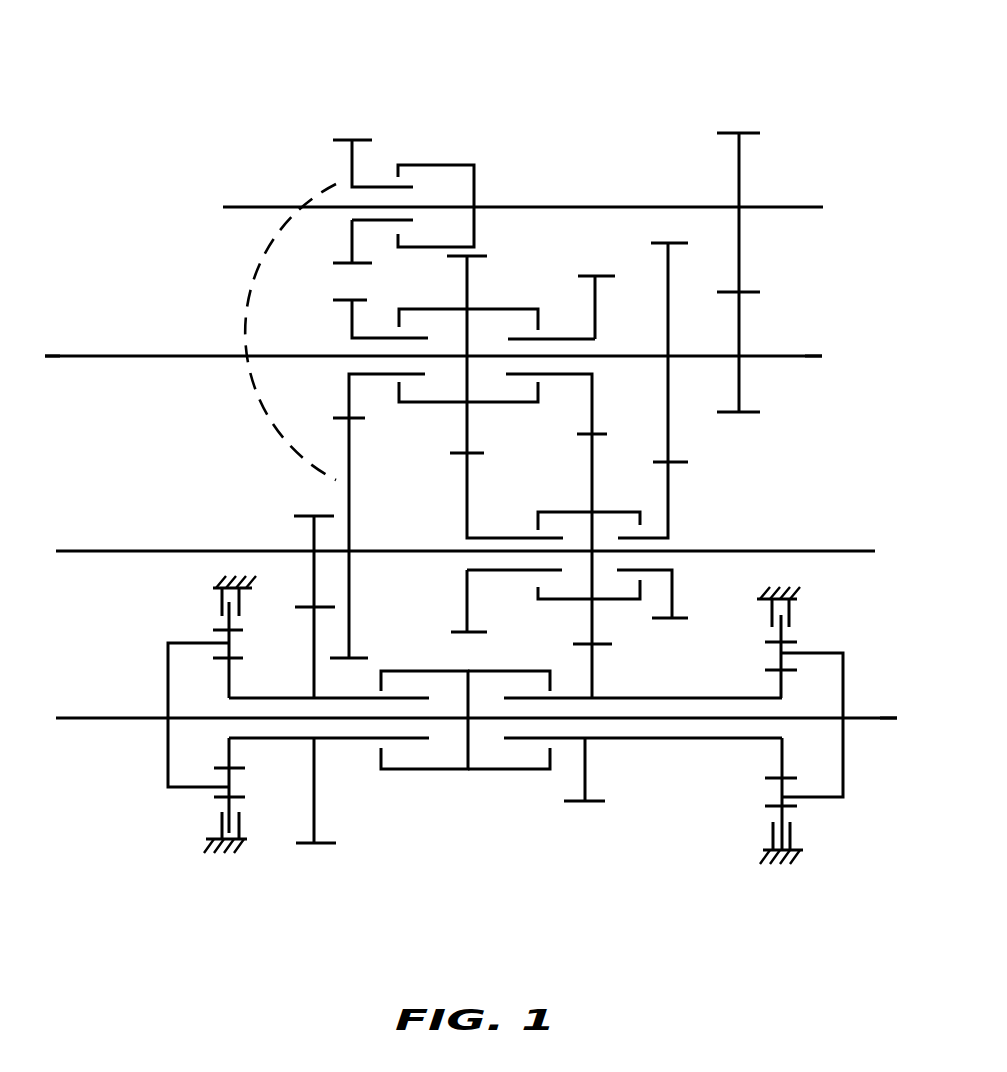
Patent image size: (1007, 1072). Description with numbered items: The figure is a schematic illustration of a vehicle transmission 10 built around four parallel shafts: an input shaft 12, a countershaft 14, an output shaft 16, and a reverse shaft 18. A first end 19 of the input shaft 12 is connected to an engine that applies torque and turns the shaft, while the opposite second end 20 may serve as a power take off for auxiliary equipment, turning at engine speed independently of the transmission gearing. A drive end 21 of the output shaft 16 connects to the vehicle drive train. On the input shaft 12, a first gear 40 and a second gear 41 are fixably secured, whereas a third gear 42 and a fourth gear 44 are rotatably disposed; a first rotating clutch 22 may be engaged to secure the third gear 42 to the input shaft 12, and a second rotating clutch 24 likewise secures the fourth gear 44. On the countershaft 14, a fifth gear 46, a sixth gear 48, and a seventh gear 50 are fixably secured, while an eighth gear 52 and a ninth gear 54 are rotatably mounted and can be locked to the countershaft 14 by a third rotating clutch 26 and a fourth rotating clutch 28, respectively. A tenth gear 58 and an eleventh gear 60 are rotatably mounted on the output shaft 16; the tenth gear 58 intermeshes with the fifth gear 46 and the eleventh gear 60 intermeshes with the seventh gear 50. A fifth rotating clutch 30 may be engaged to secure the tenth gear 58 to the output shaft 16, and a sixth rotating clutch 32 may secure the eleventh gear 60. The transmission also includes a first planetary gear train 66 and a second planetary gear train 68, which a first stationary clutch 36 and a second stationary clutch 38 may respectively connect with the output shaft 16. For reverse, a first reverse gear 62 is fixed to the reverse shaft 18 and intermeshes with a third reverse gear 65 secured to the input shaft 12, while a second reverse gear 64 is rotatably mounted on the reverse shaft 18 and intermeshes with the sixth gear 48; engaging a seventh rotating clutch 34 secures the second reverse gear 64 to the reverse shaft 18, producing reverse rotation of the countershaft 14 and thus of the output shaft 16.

The vehicle transmission 10 is at (162, 84).
The input shaft 12 is at (158, 355).
The countershaft 14 is at (172, 550).
The output shaft 16 is at (88, 717).
The reverse shaft 18 is at (224, 206).
The first end 19 is at (45, 355).
The second end 20 is at (822, 355).
The drive end 21 is at (897, 717).
The first rotating clutch 22 is at (413, 320).
The second rotating clutch 24 is at (527, 320).
The third rotating clutch 26 is at (556, 525).
The fourth rotating clutch 28 is at (618, 522).
The fifth rotating clutch 30 is at (400, 688).
The sixth rotating clutch 32 is at (512, 688).
The seventh rotating clutch 34 is at (414, 178).
The first stationary clutch 36 is at (222, 603).
The second stationary clutch 38 is at (790, 612).
The first gear 40 is at (469, 288).
The second gear 41 is at (668, 330).
The third gear 42 is at (352, 325).
The fourth gear 44 is at (597, 292).
The fifth gear 46 is at (314, 533).
The sixth gear 48 is at (350, 500).
The seventh gear 50 is at (593, 458).
The eighth gear 52 is at (468, 503).
The ninth gear 54 is at (669, 486).
The tenth gear 58 is at (313, 662).
The eleventh gear 60 is at (593, 668).
The first reverse gear 62 is at (740, 152).
The second reverse gear 64 is at (352, 150).
The third reverse gear 65 is at (740, 318).
The first planetary gear train 66 is at (188, 643).
The second planetary gear train 68 is at (843, 653).